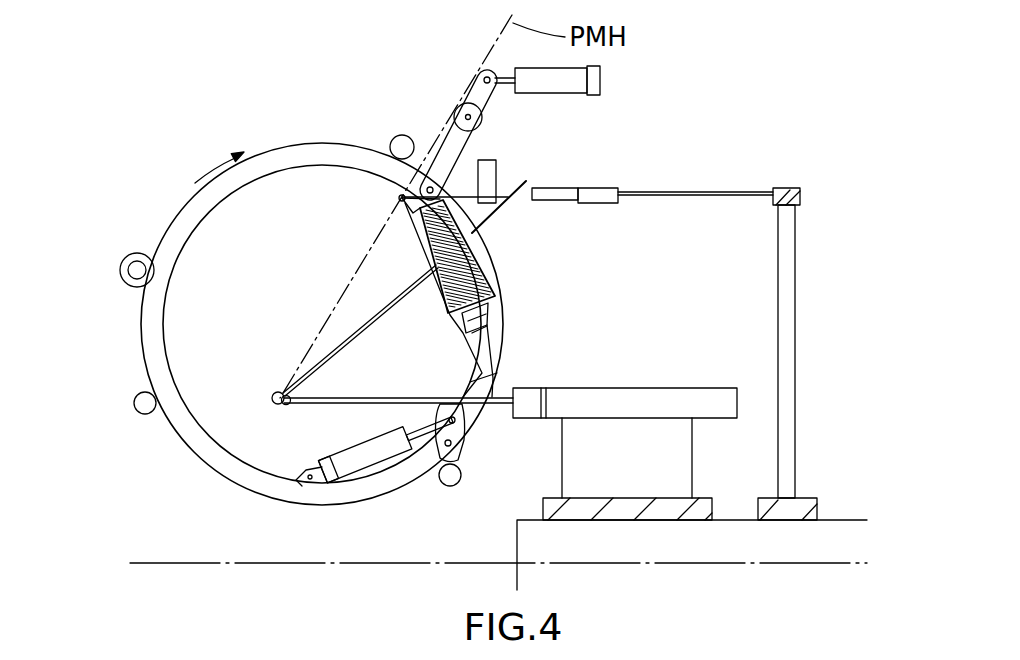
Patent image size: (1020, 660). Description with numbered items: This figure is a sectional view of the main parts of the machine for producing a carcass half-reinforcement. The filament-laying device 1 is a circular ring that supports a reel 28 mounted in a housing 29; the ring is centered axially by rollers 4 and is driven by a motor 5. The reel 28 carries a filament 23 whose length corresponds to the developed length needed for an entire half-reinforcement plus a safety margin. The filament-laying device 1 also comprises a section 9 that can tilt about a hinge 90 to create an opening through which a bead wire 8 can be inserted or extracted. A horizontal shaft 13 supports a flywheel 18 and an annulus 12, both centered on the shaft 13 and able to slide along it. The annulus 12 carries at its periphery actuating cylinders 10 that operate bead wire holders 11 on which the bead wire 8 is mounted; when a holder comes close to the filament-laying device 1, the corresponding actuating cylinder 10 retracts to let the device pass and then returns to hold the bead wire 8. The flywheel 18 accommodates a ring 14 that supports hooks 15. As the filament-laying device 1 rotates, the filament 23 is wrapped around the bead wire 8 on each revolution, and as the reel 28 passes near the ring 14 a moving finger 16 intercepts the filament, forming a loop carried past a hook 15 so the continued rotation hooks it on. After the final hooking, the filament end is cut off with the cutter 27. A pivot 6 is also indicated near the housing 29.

The filament-laying device 1 is at (216, 198).
The rollers 4 is at (402, 135).
The motor 5 is at (137, 253).
The pivot 6 is at (400, 198).
The bead wire 8 is at (272, 402).
The section 9 is at (470, 420).
The actuating cylinders 10 is at (360, 397).
The bead wire holders 11 is at (285, 404).
The annulus 12 is at (690, 508).
The horizontal shaft 13 is at (752, 548).
The ring 14 is at (600, 192).
The hooks 15 is at (524, 198).
The moving finger 16 is at (457, 143).
The flywheel 18 is at (800, 192).
The filament 23 is at (508, 197).
The cutter 27 is at (497, 165).
The reel 28 is at (488, 274).
The housing 29 is at (424, 242).
The hinge 90 is at (316, 484).